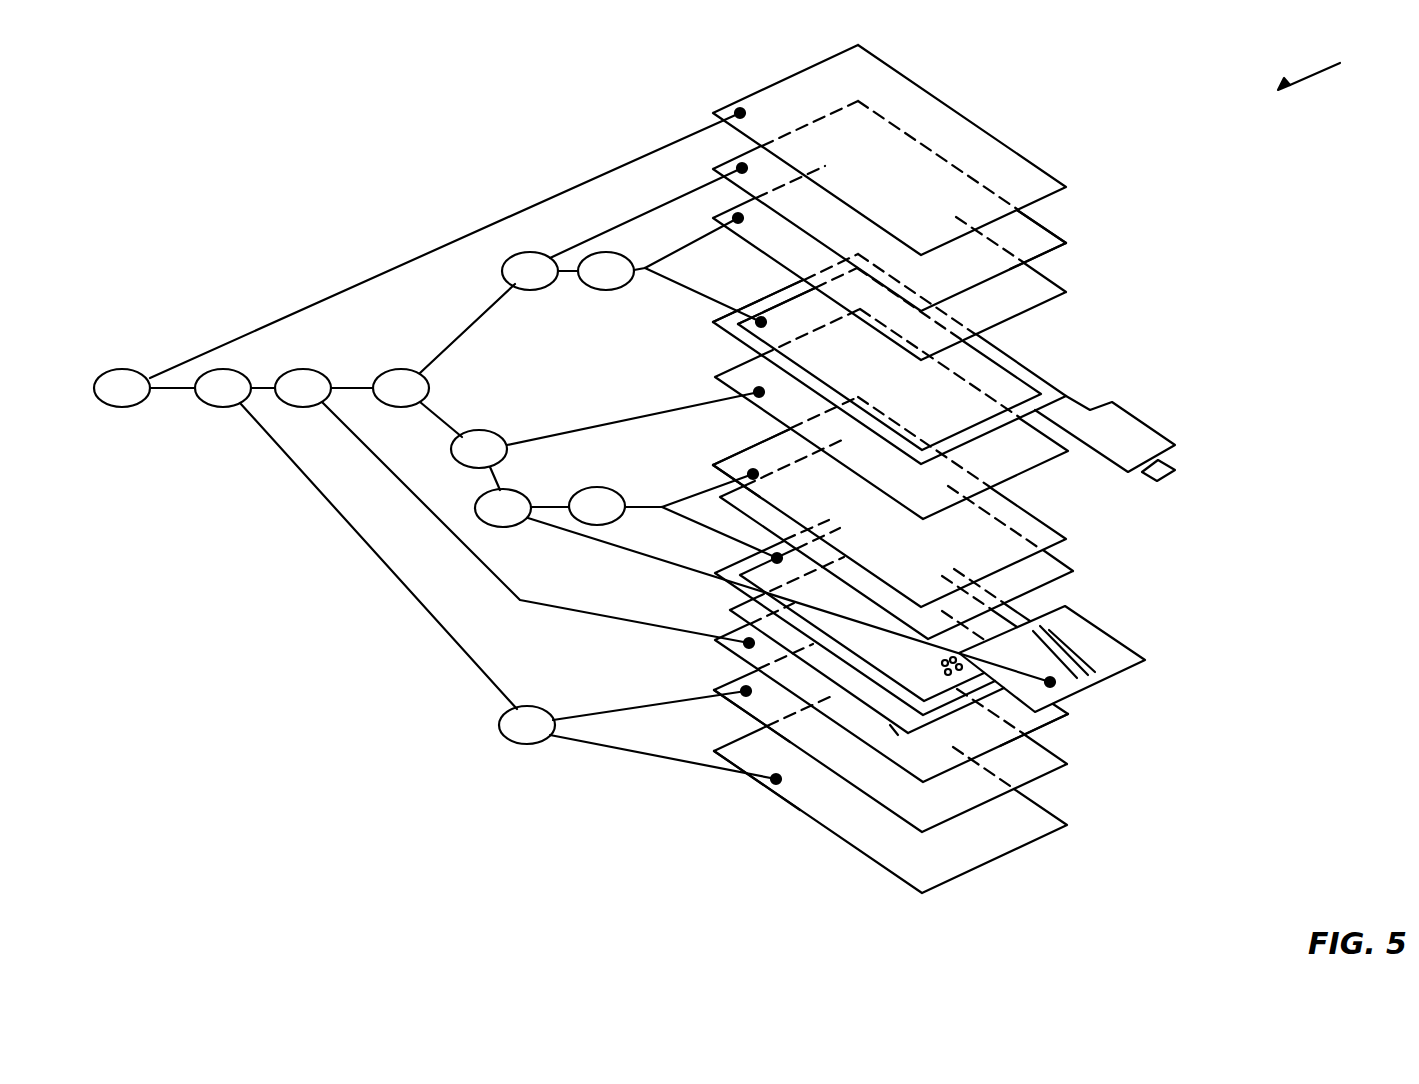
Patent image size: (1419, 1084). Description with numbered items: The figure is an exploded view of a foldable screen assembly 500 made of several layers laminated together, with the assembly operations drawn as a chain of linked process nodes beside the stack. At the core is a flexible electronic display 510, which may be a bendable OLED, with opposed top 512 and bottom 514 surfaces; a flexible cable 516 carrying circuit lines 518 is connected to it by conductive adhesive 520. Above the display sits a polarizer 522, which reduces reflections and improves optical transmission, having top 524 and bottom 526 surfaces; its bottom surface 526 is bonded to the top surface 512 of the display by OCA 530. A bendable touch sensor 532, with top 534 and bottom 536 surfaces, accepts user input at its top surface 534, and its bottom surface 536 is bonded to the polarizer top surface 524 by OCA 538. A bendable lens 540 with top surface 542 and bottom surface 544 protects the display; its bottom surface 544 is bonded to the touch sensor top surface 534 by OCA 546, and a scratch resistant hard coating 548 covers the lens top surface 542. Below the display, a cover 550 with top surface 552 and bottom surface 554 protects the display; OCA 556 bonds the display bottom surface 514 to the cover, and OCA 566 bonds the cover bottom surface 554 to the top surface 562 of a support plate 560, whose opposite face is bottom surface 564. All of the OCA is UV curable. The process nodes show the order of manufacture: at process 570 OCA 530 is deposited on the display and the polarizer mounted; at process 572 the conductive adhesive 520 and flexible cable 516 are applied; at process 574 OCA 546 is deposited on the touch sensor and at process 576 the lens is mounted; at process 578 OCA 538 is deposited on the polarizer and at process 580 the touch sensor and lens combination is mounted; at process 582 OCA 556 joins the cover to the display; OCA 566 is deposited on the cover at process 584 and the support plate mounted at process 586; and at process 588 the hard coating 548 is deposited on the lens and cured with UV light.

The foldable screen assembly 500 is at (1341, 70).
The electronic display 510 is at (1020, 598).
The top surface of electronic display 512 is at (742, 562).
The bottom surface of electronic display 514 is at (717, 578).
The flexible cable 516 is at (1107, 665).
The circuit lines 518 is at (1092, 670).
The conductive adhesive 520 is at (952, 676).
The polarizer 522 is at (1020, 527).
The top surface of polarizer 524 is at (737, 461).
The bottom surface of polarizer 526 is at (722, 478).
The OCA 530 is at (1030, 567).
The touch sensor 532 is at (997, 392).
The top surface of touch sensor 534 is at (773, 297).
The bottom surface of touch sensor 536 is at (740, 324).
The OCA 538 is at (1023, 457).
The lens 540 is at (1027, 242).
The top surface of lens 542 is at (1025, 222).
The bottom surface of lens 544 is at (1057, 247).
The OCA 546 is at (1040, 287).
The hard coating 548 is at (943, 130).
The cover 550 is at (1028, 720).
The top surface of cover 552 is at (745, 627).
The bottom surface of cover 554 is at (718, 647).
The OCA 556 is at (890, 725).
The support plate 560 is at (990, 848).
The top surface of support plate 562 is at (758, 751).
The bottom surface of support plate 564 is at (778, 797).
The OCA 566 is at (1017, 773).
The process 570 is at (673, 516).
The process 572 is at (762, 585).
The process 574 is at (669, 270).
The process 576 is at (622, 229).
The process 578 is at (589, 441).
The process 580 is at (444, 345).
The process 582 is at (512, 506).
The process 584 is at (637, 735).
The process 586 is at (356, 539).
The process 588 is at (417, 260).